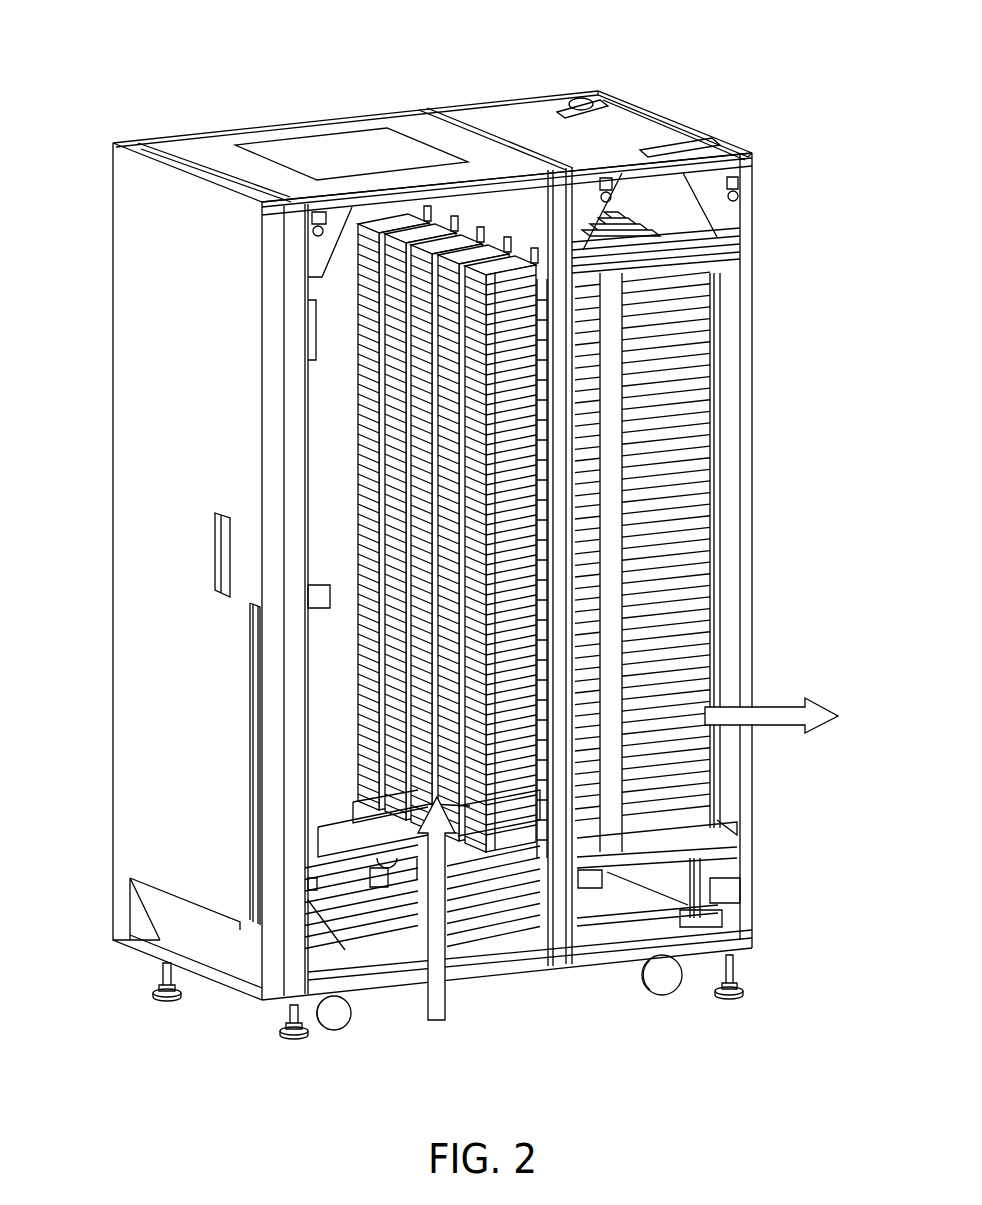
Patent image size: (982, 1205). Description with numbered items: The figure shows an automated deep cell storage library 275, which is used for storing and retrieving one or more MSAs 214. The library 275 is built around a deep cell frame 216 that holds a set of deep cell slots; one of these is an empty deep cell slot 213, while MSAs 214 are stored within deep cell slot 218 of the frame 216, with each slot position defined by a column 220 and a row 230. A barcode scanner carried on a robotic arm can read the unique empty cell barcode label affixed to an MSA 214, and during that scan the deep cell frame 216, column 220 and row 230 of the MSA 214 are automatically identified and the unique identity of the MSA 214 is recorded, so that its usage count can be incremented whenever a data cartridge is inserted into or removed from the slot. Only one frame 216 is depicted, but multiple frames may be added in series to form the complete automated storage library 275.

The deep cell storage library 275 is at (402, 40).
The deep cell frame 216 is at (113, 697).
The MSA 214 is at (437, 242).
The empty deep cell slot 213 is at (683, 240).
The deep cell slot 218 is at (708, 438).
The column 220 is at (462, 1077).
The row 230 is at (888, 759).